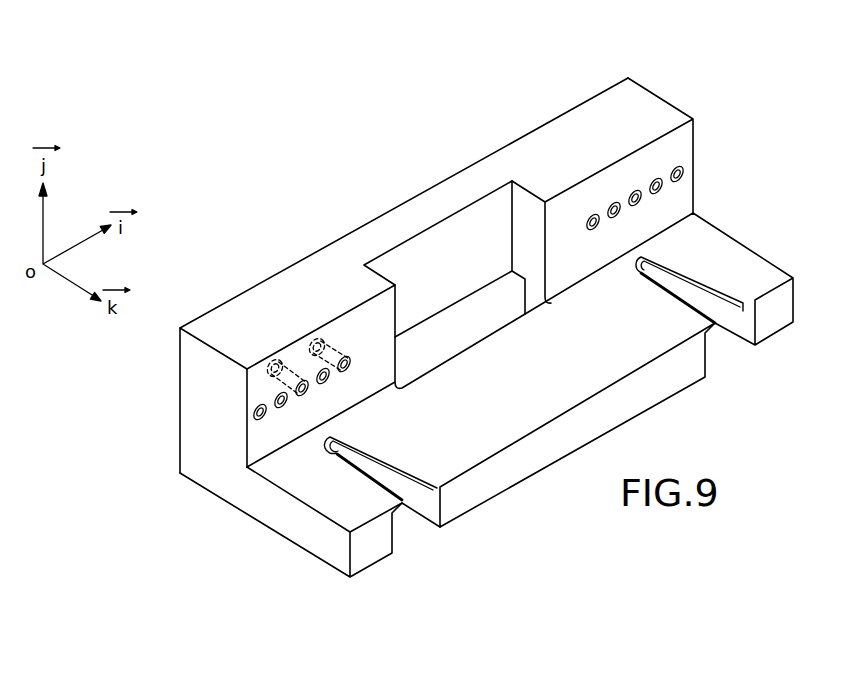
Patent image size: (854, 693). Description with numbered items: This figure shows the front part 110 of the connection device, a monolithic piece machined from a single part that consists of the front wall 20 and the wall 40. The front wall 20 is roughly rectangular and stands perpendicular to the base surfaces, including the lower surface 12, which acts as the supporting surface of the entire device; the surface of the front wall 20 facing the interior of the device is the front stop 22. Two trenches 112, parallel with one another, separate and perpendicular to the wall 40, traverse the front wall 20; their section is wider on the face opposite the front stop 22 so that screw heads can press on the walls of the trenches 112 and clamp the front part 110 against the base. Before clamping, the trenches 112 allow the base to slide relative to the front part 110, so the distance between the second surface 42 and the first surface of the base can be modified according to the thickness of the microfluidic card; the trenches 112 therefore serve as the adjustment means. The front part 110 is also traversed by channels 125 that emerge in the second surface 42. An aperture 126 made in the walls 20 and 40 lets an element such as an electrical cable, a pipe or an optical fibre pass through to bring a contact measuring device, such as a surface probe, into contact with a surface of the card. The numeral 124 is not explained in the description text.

The lower surface 12 is at (724, 262).
The front wall 20 is at (333, 553).
The front stop 22 is at (340, 502).
The wall 40 is at (203, 398).
The second surface 42 is at (261, 434).
The front part 110 is at (228, 538).
The trenches 112 is at (385, 448).
The holes in right block 124 is at (668, 188).
The channels 125 is at (325, 340).
The aperture 126 is at (482, 307).